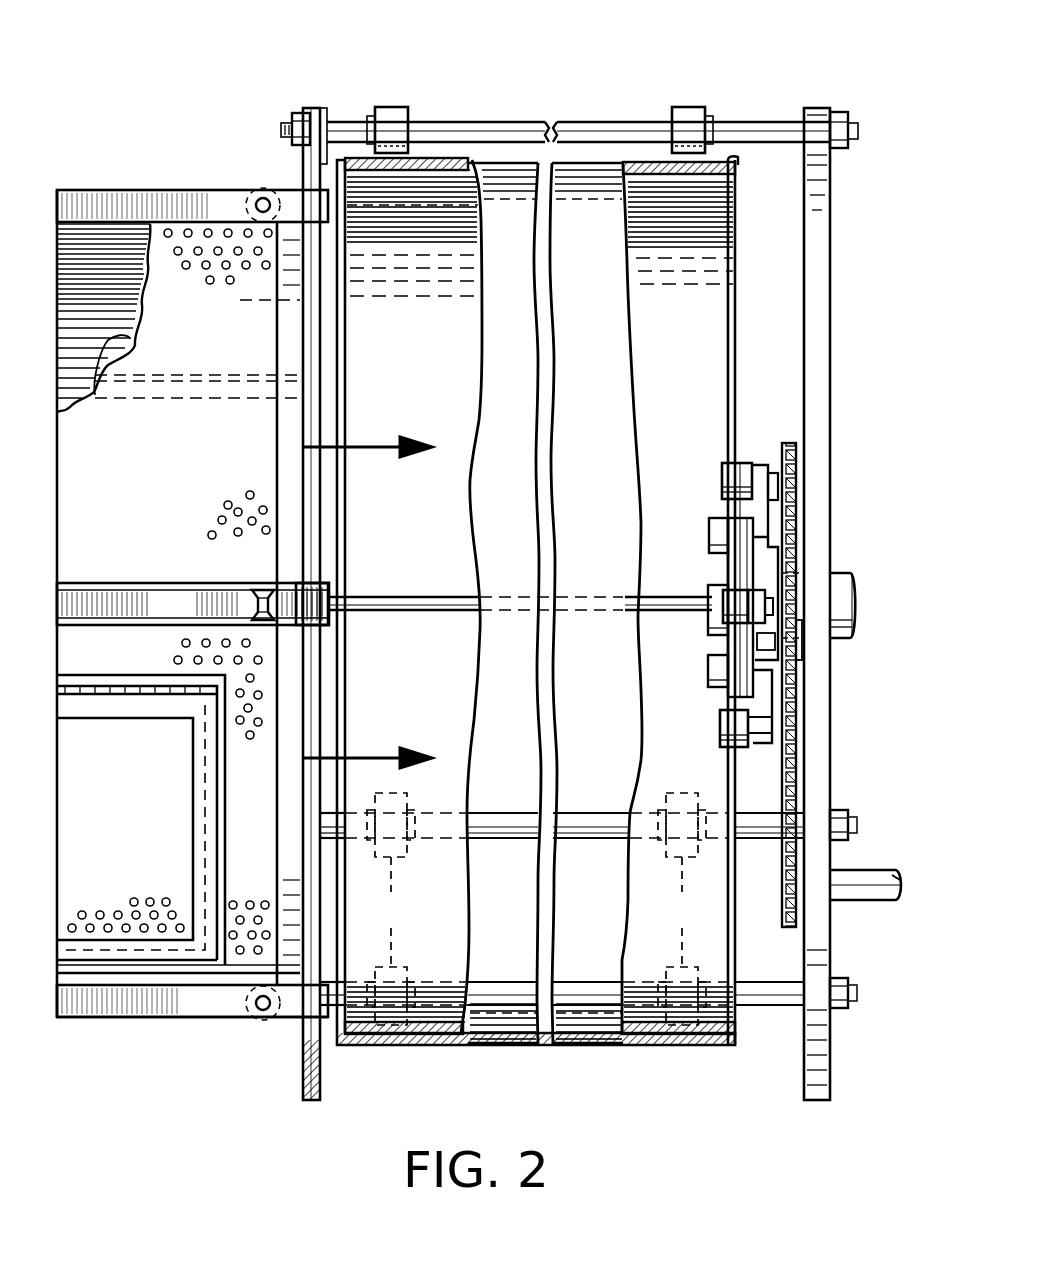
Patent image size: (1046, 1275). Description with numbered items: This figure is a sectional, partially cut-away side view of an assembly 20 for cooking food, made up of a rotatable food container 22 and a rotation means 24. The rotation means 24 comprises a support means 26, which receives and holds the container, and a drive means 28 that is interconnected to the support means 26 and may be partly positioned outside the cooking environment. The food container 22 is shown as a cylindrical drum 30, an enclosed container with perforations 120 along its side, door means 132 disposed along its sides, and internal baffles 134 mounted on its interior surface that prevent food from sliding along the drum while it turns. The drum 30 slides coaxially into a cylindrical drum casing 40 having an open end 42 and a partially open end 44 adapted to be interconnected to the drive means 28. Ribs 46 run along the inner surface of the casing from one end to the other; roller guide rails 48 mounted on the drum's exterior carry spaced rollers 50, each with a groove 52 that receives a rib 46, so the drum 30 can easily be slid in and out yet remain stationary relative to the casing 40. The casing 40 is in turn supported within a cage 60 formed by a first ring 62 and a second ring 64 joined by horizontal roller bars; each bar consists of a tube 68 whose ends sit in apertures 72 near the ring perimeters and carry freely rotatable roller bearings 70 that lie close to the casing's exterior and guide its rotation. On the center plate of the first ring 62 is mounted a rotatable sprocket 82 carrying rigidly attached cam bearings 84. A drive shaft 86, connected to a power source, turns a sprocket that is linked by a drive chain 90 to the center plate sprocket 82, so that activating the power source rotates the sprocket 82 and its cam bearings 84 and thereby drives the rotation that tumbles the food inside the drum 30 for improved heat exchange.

The assembly 20 is at (868, 115).
The rotatable food container 22 is at (176, 212).
The rotation means 24 is at (352, 150).
The support means 26 is at (628, 110).
The drive means 28 is at (800, 512).
The cylindrical drum 30 is at (244, 980).
The drum casing 40 is at (510, 982).
The open end 42 is at (340, 980).
The partially open end 44 is at (730, 962).
The ribs 46 is at (695, 176).
The roller guide rails 48 is at (105, 625).
The rollers 50 is at (265, 188).
The groove 52 is at (250, 603).
The cage 60 is at (466, 112).
The first ring 62 is at (835, 205).
The second ring 64 is at (318, 108).
The tube 68 is at (582, 122).
The roller bearings 70 is at (390, 115).
The apertures 72 is at (820, 110).
The rotatable sprocket 82 is at (798, 462).
The cam bearings 84 is at (722, 478).
The drive shaft 86 is at (870, 880).
The drive chain 90 is at (790, 760).
The perforations 120 is at (206, 235).
The door means 132 is at (115, 870).
The baffles 134 is at (130, 338).